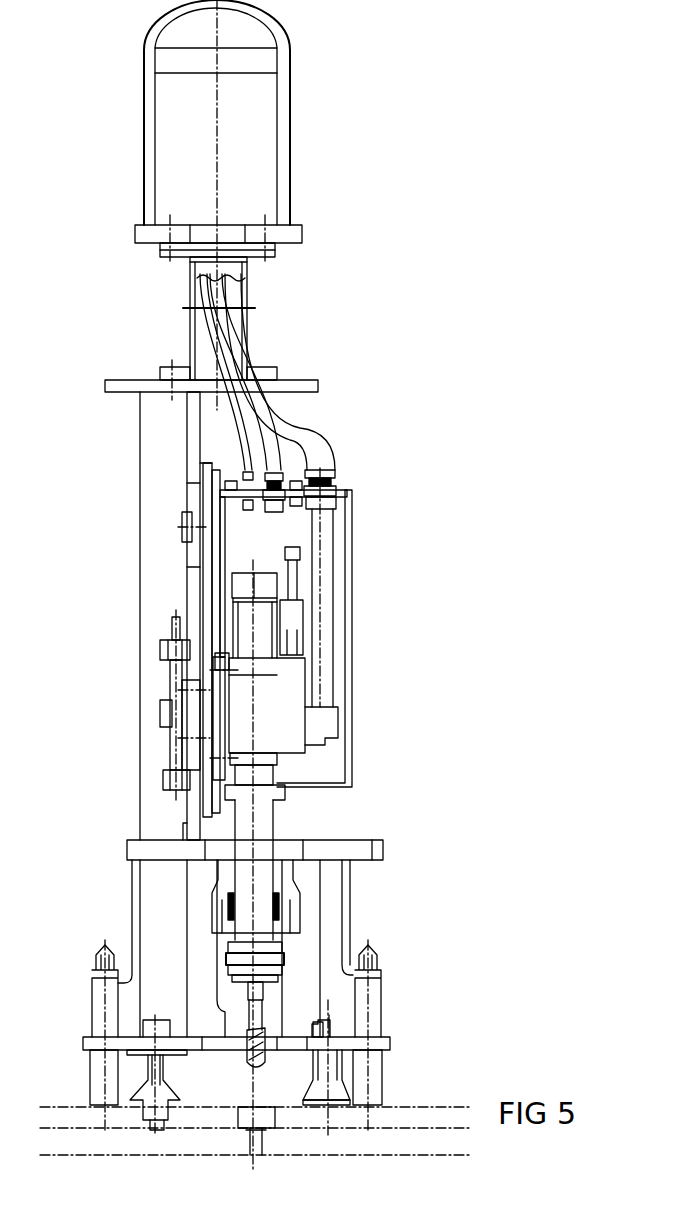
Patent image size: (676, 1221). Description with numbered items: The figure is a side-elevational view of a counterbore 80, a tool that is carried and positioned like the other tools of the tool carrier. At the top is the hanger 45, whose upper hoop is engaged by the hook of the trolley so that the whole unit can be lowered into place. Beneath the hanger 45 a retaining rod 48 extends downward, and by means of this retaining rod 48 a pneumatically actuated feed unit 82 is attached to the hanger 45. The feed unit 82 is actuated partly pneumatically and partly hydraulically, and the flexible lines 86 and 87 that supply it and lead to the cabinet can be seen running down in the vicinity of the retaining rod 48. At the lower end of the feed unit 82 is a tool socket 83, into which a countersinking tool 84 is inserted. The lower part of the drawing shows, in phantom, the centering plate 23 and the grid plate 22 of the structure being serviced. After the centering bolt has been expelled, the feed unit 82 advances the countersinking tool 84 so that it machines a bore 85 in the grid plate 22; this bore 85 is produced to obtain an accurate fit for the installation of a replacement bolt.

The grid plate 22 is at (440, 1130).
The centering plate 23 is at (56, 1118).
The hanger 45 is at (290, 108).
The retaining rod 48 is at (247, 300).
The counterbore 80 is at (405, 516).
The feed unit 82 is at (303, 722).
The tool socket 83 is at (283, 965).
The countersinking tool 84 is at (245, 1040).
The bore 85 is at (252, 1148).
The flexible line 86 is at (257, 425).
The flexible line 87 is at (270, 432).